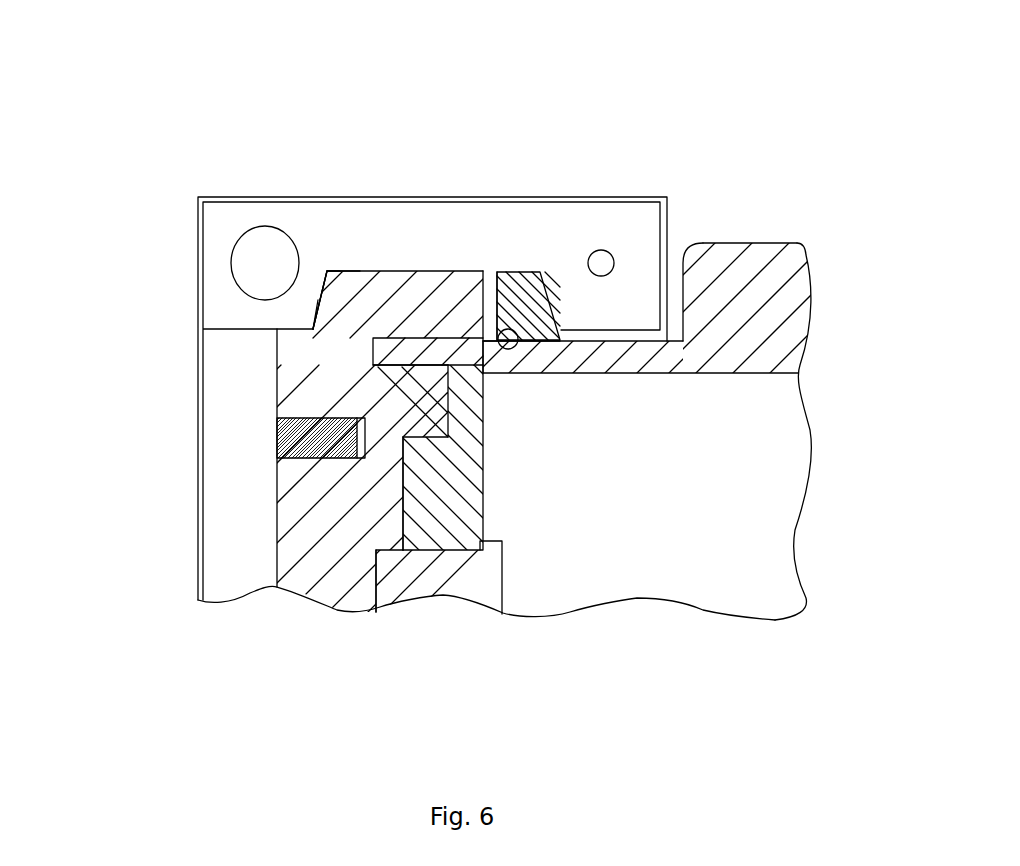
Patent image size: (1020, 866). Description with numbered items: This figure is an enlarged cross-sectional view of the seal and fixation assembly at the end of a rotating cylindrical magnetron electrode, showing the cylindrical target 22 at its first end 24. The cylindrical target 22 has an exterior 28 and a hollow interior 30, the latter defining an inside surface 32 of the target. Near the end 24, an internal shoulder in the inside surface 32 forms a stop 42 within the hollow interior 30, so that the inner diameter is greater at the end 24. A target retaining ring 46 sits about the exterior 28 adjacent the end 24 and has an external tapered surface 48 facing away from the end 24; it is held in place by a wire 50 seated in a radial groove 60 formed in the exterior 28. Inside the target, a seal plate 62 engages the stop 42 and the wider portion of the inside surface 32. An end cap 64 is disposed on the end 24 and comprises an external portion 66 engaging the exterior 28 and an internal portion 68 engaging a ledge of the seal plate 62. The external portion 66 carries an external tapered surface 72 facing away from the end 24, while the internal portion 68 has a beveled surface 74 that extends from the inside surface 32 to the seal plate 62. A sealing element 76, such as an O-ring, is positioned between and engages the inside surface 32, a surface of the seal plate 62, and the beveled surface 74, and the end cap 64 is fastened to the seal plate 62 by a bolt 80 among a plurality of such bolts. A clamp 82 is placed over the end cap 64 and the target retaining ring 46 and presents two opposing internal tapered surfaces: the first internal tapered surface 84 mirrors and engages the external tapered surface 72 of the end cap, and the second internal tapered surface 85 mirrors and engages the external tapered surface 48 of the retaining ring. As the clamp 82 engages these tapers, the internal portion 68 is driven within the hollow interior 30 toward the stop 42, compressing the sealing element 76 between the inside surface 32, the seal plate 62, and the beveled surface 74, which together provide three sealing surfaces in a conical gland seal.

The cylindrical target 22 is at (782, 242).
The first end 24 is at (373, 357).
The exterior 28 is at (727, 227).
The hollow interior 30 is at (678, 557).
The inside surface 32 is at (648, 387).
The stop 42 is at (482, 515).
The target retaining ring 46 is at (503, 253).
The external tapered surface 48 is at (530, 283).
The wire 50 is at (578, 340).
The radial groove 60 is at (495, 328).
The seal plate 62 is at (465, 482).
The end cap 64 is at (315, 583).
The external portion 66 is at (412, 305).
The internal portion 68 is at (420, 430).
The external tapered surface 72 is at (320, 308).
The beveled surface 74 is at (433, 410).
The sealing element 76 is at (423, 387).
The bolt 80 is at (503, 567).
The clamp 82 is at (430, 232).
The first internal tapered surface 84 is at (325, 280).
The second internal tapered surface 85 is at (538, 317).